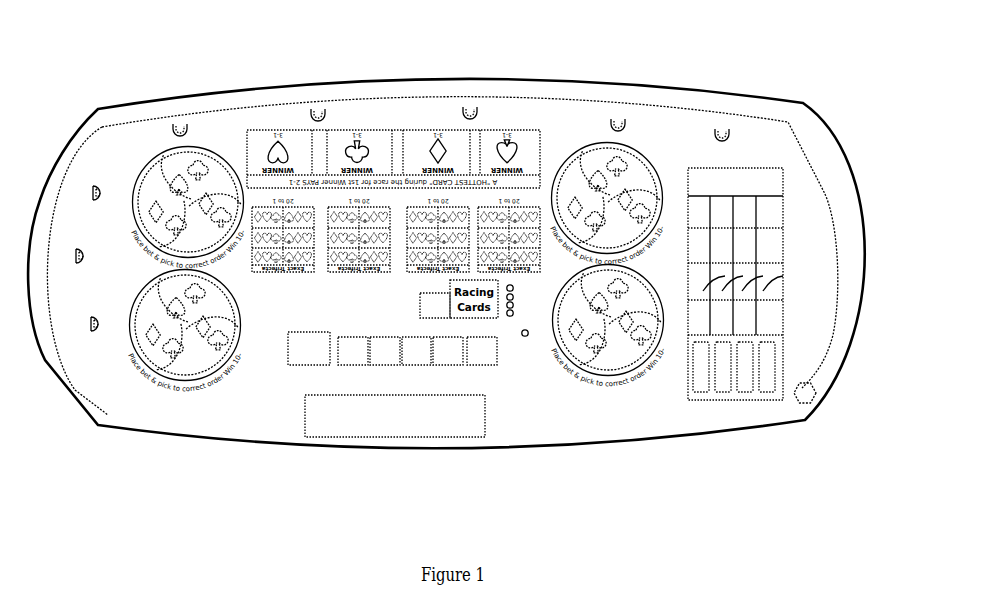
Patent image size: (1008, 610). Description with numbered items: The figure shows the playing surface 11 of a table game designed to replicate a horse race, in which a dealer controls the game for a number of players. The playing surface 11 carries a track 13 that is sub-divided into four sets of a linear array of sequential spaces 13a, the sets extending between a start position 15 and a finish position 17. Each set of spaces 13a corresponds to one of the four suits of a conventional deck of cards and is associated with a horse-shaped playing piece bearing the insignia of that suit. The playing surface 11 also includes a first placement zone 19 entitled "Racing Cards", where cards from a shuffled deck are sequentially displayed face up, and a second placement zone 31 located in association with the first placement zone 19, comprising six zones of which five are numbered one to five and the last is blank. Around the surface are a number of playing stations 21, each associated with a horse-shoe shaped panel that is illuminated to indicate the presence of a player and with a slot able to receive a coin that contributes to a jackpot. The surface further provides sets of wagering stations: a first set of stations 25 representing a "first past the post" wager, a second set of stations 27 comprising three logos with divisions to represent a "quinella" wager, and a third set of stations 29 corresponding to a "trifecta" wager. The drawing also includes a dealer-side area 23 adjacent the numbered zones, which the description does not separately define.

The playing surface 11 is at (859, 179).
The track 13 is at (783, 243).
The sequential spaces 13a is at (703, 291).
The start position 15 is at (785, 357).
The finish position 17 is at (777, 170).
The first placement zone 19 is at (513, 300).
The playing stations 21 is at (327, 112).
The dealer chip tray 23 is at (428, 410).
The first set of stations 25 is at (290, 115).
The second set of stations 27 is at (645, 153).
The third set of stations 29 is at (495, 280).
The second placement zone 31 is at (391, 366).